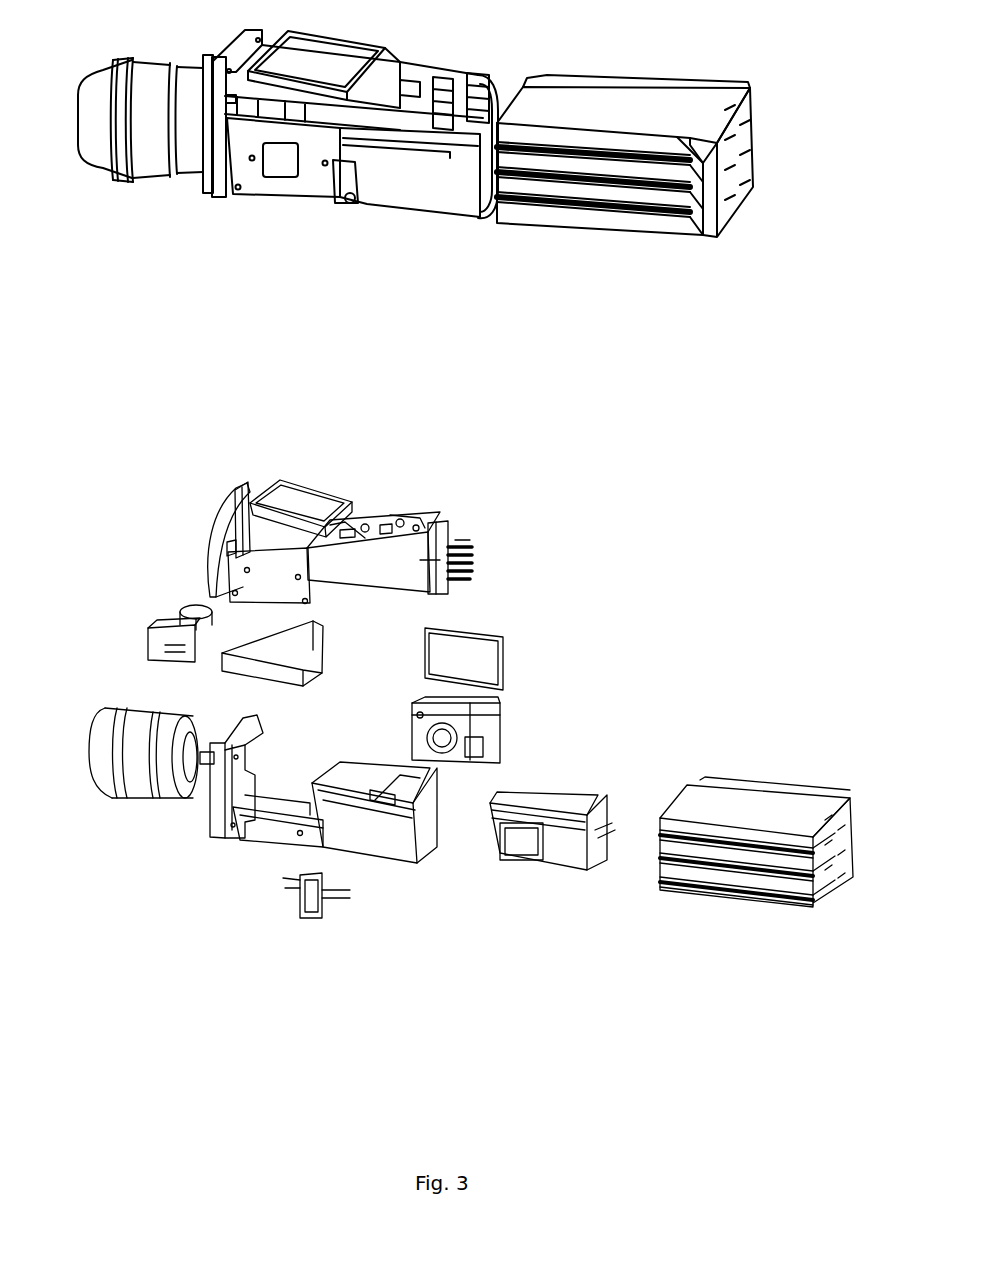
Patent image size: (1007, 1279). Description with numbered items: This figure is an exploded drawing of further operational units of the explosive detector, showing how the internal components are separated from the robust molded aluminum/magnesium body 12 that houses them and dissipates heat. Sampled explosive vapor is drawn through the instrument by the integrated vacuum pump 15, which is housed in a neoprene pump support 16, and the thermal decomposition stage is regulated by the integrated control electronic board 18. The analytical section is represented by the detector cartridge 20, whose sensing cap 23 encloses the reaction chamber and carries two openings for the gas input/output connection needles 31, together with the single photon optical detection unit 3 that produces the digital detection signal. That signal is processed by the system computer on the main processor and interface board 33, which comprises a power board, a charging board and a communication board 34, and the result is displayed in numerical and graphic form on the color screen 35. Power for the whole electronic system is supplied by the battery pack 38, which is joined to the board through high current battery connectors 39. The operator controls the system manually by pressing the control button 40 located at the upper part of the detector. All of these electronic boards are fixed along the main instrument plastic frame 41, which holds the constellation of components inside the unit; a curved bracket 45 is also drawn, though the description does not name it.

The single photon optical detection unit 3 is at (500, 717).
The molded aluminum/magnesium body 12 is at (105, 785).
The vacuum pump 15 is at (165, 642).
The neoprene pump support 16 is at (268, 565).
The control electronic board 18 is at (217, 500).
The detector cartridge 20 is at (590, 873).
The sensing cap 23 is at (533, 850).
The gas input/output connection needles 31 is at (323, 920).
The main processor and interface board 33 is at (440, 522).
The communication board 34 is at (475, 553).
The color screen 35 is at (300, 502).
The battery pack 38 is at (802, 812).
The high current battery connectors 39 is at (420, 565).
The control button 40 is at (370, 517).
The main instrument plastic frame 41 is at (380, 858).
The curved bracket 45 is at (222, 497).